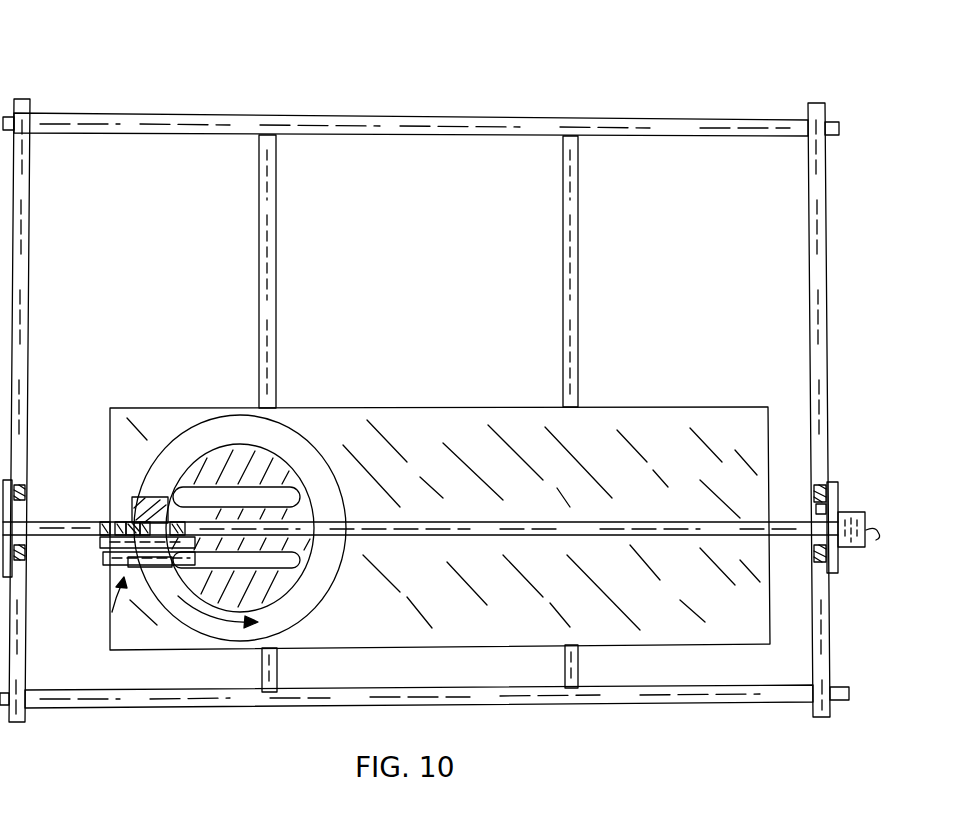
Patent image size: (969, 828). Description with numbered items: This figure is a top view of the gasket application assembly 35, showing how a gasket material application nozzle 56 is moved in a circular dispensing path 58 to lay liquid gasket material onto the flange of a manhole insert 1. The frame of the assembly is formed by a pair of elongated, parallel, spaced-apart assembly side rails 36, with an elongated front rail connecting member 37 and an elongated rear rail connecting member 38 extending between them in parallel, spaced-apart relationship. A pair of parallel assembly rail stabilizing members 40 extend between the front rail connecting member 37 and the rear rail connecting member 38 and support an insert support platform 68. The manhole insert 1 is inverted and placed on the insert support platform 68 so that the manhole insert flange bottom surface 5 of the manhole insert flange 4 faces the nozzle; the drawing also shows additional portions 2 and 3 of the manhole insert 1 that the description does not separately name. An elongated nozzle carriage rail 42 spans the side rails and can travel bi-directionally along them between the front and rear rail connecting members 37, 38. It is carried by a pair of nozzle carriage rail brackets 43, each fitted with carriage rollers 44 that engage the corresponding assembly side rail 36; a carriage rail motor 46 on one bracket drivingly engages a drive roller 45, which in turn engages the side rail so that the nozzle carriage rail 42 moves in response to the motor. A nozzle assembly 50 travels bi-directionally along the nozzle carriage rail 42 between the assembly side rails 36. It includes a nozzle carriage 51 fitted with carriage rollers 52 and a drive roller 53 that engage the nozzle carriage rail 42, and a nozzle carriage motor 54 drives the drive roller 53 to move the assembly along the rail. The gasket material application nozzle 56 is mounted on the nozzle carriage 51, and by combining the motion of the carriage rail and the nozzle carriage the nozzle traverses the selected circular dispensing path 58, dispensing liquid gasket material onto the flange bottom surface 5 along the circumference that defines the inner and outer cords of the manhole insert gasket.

The gasket application assembly 35 is at (150, 45).
The assembly side rails 36 is at (22, 271).
The front rail connecting member 37 is at (718, 700).
The rear rail connecting member 38 is at (405, 127).
The assembly rail stabilizing members 40 is at (565, 262).
The nozzle carriage rail 42 is at (480, 522).
The nozzle carriage rail brackets 43 is at (12, 540).
The carriage rollers 44 is at (20, 490).
The drive roller 45 is at (820, 512).
The carriage rail motor 46 is at (855, 514).
The nozzle assembly 50 is at (112, 612).
The nozzle carriage 51 is at (100, 520).
The carriage rollers 52 is at (108, 522).
The drive roller 53 is at (140, 498).
The nozzle carriage motor 54 is at (160, 525).
The gasket material application nozzle 56 is at (155, 568).
The circular dispensing path 58 is at (205, 428).
The manhole insert 1 is at (320, 428).
The inner drum wall 2 is at (270, 442).
The outer drum wall 3 is at (302, 582).
The manhole insert flange 4 is at (292, 623).
The manhole insert flange bottom surface 5 is at (330, 497).
The insert support platform 68 is at (490, 418).